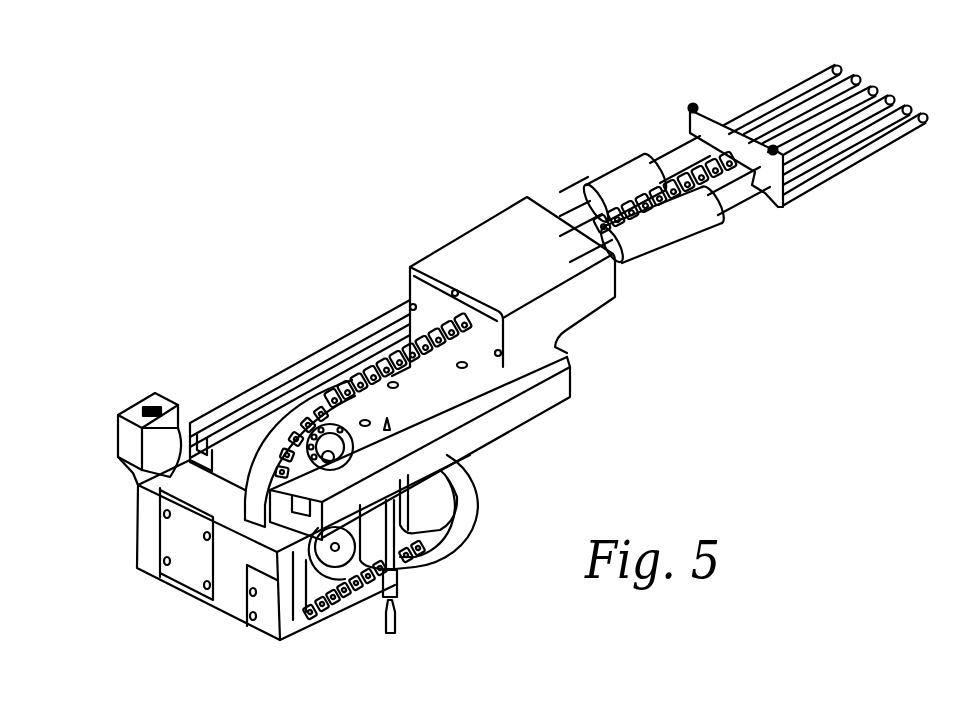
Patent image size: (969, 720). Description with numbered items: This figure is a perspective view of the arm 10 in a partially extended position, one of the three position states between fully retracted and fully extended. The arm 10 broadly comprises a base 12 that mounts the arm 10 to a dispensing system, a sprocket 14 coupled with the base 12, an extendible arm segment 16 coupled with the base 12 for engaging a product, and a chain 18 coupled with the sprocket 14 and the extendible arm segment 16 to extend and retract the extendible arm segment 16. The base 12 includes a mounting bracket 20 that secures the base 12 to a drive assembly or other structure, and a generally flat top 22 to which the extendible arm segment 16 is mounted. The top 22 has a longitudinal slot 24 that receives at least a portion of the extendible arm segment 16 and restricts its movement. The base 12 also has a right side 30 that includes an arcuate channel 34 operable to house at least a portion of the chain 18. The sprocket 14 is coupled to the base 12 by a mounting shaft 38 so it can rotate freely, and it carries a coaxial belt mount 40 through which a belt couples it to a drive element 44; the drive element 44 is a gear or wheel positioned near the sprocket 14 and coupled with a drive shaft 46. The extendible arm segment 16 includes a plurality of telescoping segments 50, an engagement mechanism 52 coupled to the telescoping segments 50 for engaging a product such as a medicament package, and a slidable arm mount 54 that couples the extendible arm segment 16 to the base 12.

The arm 10 is at (131, 316).
The base 12 is at (143, 540).
The sprocket 14 is at (336, 385).
The extendible arm segment 16 is at (680, 318).
The chain 18 is at (340, 607).
The mounting bracket 20 is at (185, 578).
The top 22 is at (572, 358).
The longitudinal slot 24 is at (136, 476).
The right side 30 is at (483, 477).
The arcuate channel 34 is at (458, 510).
The mounting shaft 38 is at (335, 460).
The belt mount 40 is at (316, 414).
The drive element 44 is at (343, 550).
The drive shaft 46 is at (287, 643).
The telescoping segments 50 is at (620, 177).
The engagement mechanism 52 is at (847, 80).
The slidable arm mount 54 is at (490, 238).